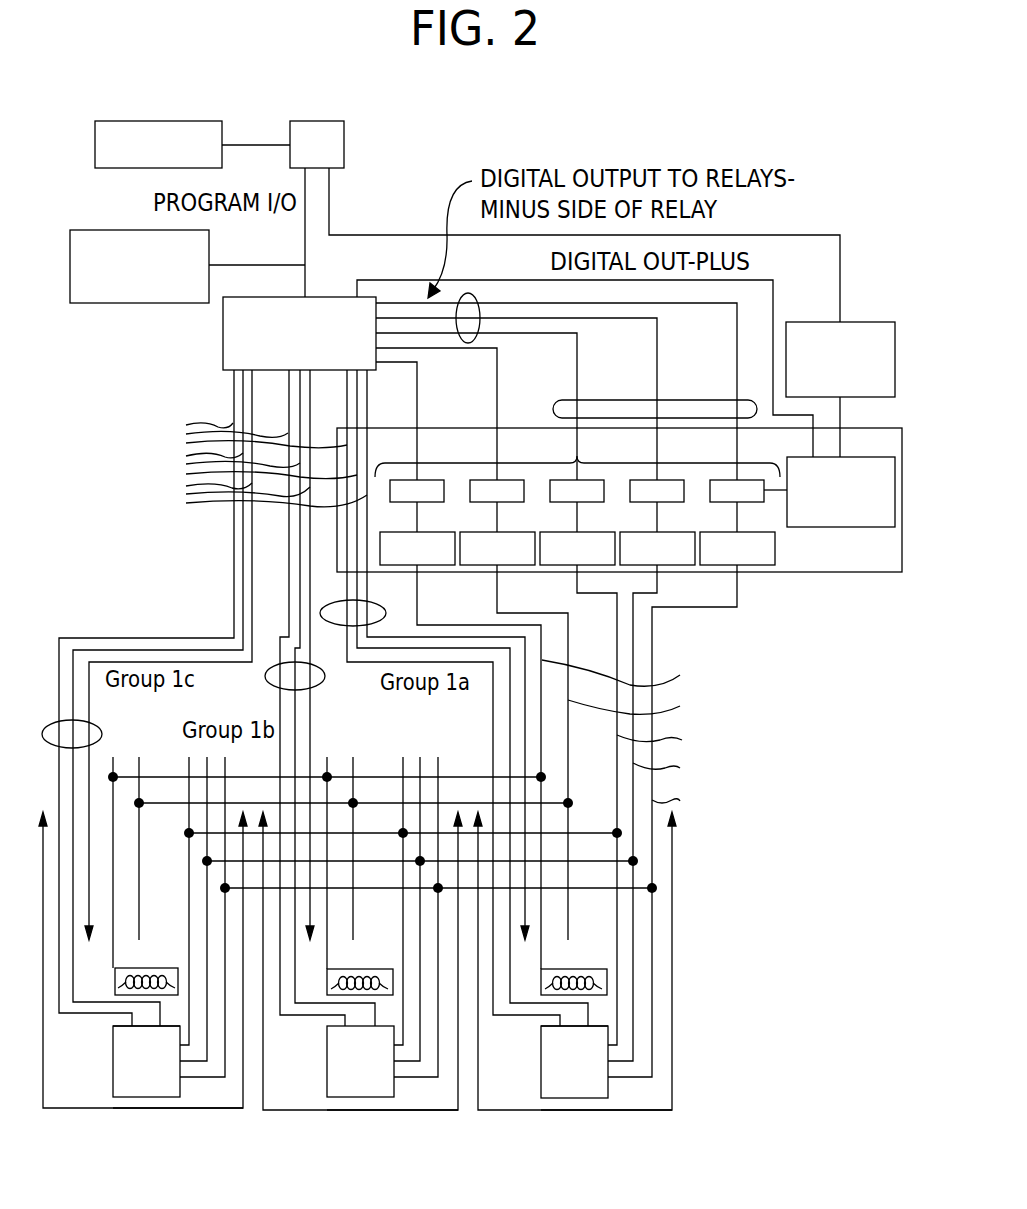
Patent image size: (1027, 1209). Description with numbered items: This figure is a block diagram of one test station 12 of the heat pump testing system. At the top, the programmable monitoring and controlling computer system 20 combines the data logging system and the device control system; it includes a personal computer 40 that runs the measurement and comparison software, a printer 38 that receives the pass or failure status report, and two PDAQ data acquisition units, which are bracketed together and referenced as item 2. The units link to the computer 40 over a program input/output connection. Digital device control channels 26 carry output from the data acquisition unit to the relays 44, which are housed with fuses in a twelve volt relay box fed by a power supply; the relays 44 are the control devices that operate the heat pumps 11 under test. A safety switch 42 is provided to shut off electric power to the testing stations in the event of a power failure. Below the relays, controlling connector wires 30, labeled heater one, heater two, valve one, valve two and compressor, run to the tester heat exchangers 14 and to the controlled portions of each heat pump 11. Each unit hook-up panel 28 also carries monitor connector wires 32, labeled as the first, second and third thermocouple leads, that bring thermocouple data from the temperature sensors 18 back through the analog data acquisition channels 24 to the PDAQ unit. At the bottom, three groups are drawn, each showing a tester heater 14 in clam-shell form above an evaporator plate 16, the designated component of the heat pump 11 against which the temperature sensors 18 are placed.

The data acquisition units 2 is at (68, 230).
The heat pump 11 is at (168, 1118).
The test station 12 is at (143, 1122).
The tester heat exchanger 14 is at (118, 992).
The evaporator plate 16 is at (127, 1087).
The temperature sensor 18 is at (131, 1026).
The programmable monitoring and controlling computer system 20 is at (365, 112).
The data acquisition channel 24 is at (102, 734).
The device control channel 26 is at (480, 337).
The unit hook-up panel 28 is at (345, 583).
The controlling connector wire 30 is at (542, 632).
The monitor connector wire 32 is at (252, 400).
The printer 38 is at (122, 170).
The personal computer 40 is at (345, 152).
The safety switch 42 is at (798, 322).
The relay 44 is at (450, 428).